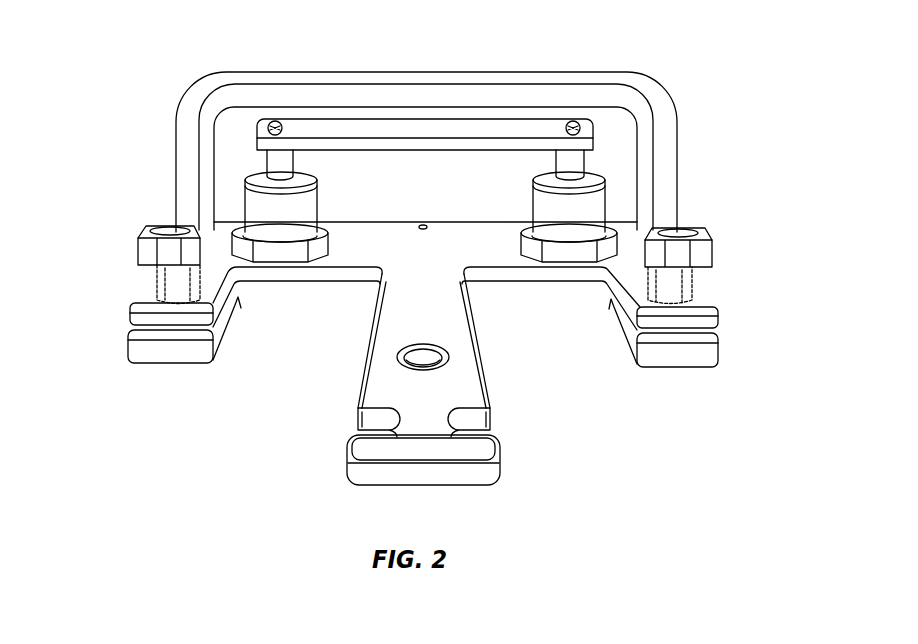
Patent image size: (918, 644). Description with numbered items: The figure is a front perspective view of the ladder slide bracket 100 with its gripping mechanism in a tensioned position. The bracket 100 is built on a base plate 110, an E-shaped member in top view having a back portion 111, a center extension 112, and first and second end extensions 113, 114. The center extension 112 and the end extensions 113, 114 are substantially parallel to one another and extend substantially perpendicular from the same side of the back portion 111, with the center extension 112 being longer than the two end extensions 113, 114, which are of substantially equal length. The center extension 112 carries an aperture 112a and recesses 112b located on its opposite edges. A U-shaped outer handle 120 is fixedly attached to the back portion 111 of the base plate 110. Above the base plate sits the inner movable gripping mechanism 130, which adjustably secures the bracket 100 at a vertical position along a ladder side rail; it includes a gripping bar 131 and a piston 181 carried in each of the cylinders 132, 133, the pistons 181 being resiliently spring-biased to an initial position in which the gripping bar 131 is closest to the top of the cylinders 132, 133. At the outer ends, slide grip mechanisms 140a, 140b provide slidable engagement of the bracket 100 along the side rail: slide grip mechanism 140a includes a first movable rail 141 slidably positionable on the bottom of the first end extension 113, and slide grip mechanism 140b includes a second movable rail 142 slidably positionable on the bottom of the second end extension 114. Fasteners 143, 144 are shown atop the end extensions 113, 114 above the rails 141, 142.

The bracket 100 is at (260, 437).
The base plate 110 is at (305, 293).
The back portion 111 is at (438, 256).
The center extension 112 is at (490, 345).
The aperture 112a is at (420, 346).
The recesses 112b is at (447, 413).
The first end extension 113 is at (118, 310).
The second end extension 114 is at (737, 313).
The outer handle 120 is at (490, 70).
The inner movable gripping mechanism 130 is at (326, 116).
The gripping bar 131 is at (510, 140).
The cylinder 132 is at (320, 197).
The cylinder 133 is at (530, 197).
The slide grip mechanism 140a is at (165, 380).
The slide grip mechanism 140b is at (683, 383).
The first movable rail 141 is at (145, 348).
The second movable rail 142 is at (700, 348).
The left wing nut 143 is at (128, 228).
The right wing nut 144 is at (725, 255).
The piston 181 is at (277, 165).